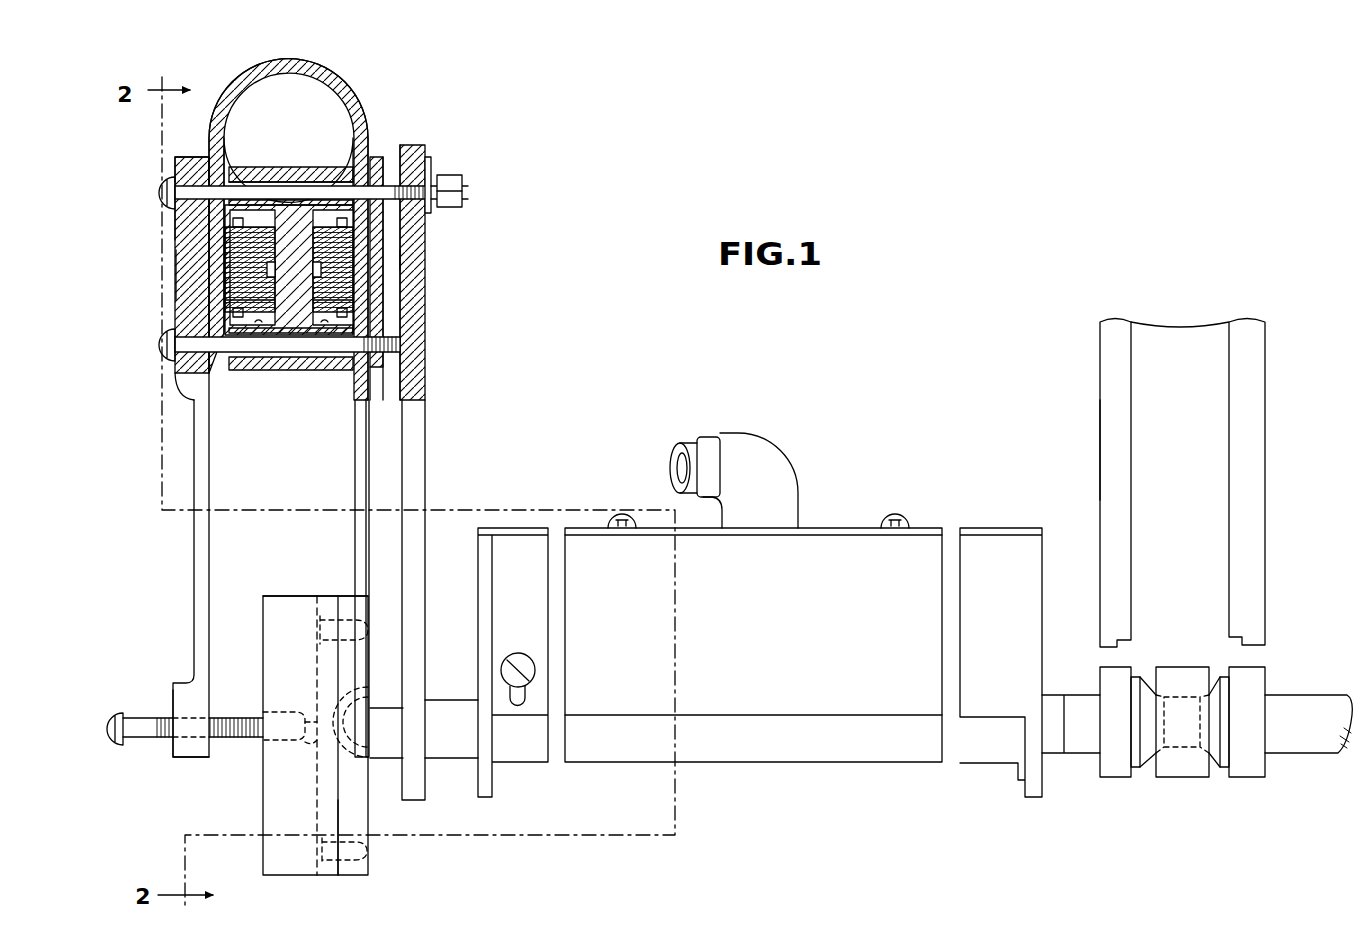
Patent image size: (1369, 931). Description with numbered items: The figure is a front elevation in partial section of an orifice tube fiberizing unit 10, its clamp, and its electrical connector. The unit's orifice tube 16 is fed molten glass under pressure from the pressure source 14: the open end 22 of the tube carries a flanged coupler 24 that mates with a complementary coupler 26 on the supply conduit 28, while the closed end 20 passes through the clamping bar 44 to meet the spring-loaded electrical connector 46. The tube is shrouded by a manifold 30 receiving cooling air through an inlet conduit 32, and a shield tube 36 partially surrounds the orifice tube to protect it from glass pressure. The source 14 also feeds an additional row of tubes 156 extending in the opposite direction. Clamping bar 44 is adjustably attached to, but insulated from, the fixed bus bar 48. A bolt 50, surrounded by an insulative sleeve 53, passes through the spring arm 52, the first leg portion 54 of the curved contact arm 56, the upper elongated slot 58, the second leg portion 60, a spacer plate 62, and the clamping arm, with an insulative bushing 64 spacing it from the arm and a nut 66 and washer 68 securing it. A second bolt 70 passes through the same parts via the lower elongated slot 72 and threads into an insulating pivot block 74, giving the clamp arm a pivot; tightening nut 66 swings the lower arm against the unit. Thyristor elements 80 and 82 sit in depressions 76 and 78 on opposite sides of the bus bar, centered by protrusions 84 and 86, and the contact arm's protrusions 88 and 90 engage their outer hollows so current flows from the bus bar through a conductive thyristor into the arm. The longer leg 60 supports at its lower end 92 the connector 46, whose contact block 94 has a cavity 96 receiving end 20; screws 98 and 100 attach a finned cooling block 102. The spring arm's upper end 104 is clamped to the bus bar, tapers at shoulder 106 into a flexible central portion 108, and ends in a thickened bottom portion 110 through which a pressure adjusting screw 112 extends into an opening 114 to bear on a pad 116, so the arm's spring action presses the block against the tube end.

The orifice tube fiberizing unit 10 is at (589, 523).
The pressure source 14 is at (1098, 387).
The orifice tube 16 is at (375, 734).
The closed end of tube 20 is at (374, 745).
The open end of tube 22 is at (1077, 750).
The flanged coupler 24 is at (1151, 754).
The complementary coupler 26 is at (1195, 766).
The supply conduit 28 is at (1177, 338).
The manifold 30 is at (848, 546).
The inlet conduit 32 is at (748, 447).
The shield tube 36 is at (454, 700).
The clamping bar 44 is at (410, 487).
The spring-loaded electrical connector 46 is at (296, 597).
The bus bar 48 is at (260, 167).
The bolt 50 is at (162, 190).
The spring arm 52 is at (188, 157).
The electrically insulative sleeve 53 is at (176, 214).
The first leg portion 54 is at (208, 241).
The curved contact arm 56 is at (222, 95).
The upper elongated slot 58 is at (322, 178).
The second leg portion 60 is at (383, 238).
The spacer plate 62 is at (380, 258).
The electrically insulative bushing 64 is at (376, 163).
The nut 66 is at (466, 185).
The washer 68 is at (433, 165).
The second bolt 70 is at (162, 347).
The lower elongated slot 72 is at (291, 363).
The insulating pivot block 74 is at (391, 370).
The depression 76 is at (258, 322).
The depression 78 is at (325, 322).
The thyristor element 80 is at (232, 300).
The thyristor element 82 is at (350, 296).
The protrusion 84 is at (272, 242).
The protrusion 86 is at (318, 290).
The protrusion 88 is at (228, 280).
The protrusion 90 is at (345, 278).
The lower end of leg 92 is at (364, 517).
The contact block 94 is at (350, 820).
The cavity 96 is at (366, 691).
The screw 98 is at (366, 623).
The screw 100 is at (369, 852).
The finned cooling block 102 is at (282, 808).
The upper end of spring arm 104 is at (186, 263).
The shoulder 106 is at (183, 378).
The central portion 108 is at (203, 494).
The bottom portion of spring arm 110 is at (193, 748).
The pressure adjusting screw 112 is at (143, 727).
The opening 114 is at (298, 708).
The pad 116 is at (306, 745).
The additional row of tubes 156 is at (1303, 706).